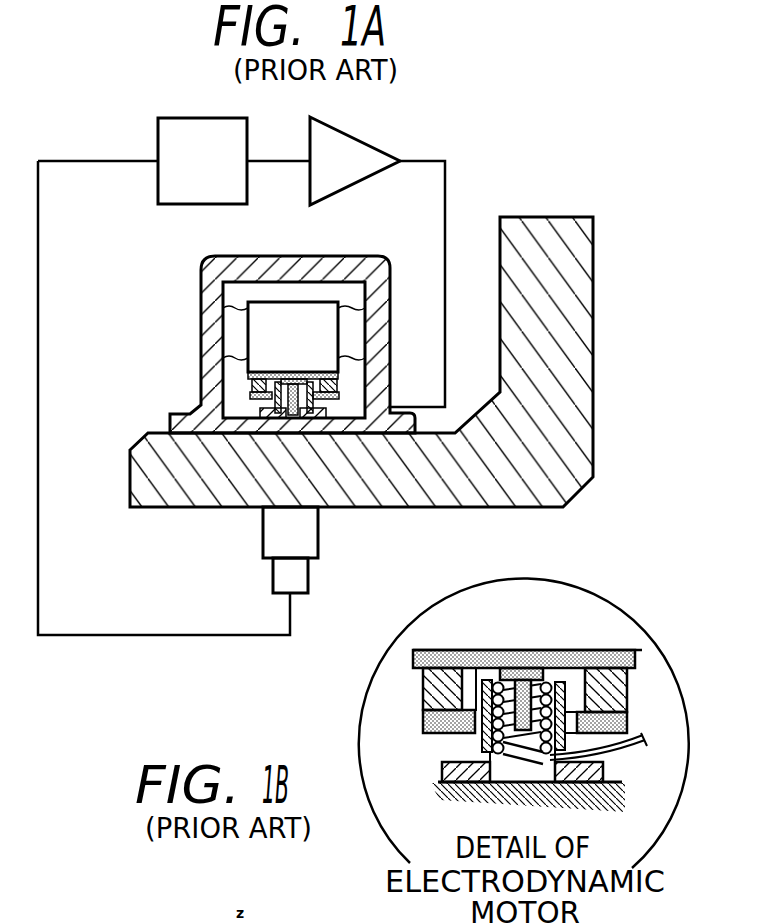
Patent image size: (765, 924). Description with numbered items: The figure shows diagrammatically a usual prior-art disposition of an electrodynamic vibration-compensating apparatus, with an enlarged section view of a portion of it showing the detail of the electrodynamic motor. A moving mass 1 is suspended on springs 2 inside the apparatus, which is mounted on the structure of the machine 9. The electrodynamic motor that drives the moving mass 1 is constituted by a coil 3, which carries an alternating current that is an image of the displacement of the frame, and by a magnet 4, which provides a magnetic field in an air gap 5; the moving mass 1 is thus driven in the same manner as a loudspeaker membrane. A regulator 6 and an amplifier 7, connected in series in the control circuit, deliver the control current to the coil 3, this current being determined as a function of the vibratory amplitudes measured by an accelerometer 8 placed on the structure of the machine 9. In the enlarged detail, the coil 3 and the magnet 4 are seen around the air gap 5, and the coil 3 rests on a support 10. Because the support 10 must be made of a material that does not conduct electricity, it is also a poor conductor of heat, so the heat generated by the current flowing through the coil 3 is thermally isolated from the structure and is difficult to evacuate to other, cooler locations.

In FIG. 1A, the moving mass 1 is at (270, 312).
In FIG. 1A, the springs 2 is at (382, 282).
In FIG. 1A, the coil 3 is at (290, 420).
In FIG. 1B, the coil 3 is at (490, 680).
In FIG. 1A, the magnet 4 is at (258, 393).
In FIG. 1B, the magnet 4 is at (615, 688).
In FIG. 1A, the air gap 5 is at (303, 420).
In FIG. 1B, the air gap 5 is at (548, 698).
In FIG. 1A, the regulator 6 is at (175, 152).
In FIG. 1A, the amplifier 7 is at (340, 143).
In FIG. 1A, the accelerometer 8 is at (298, 540).
In FIG. 1A, the machine 9 is at (572, 306).
In FIG. 1B, the support 10 is at (445, 768).